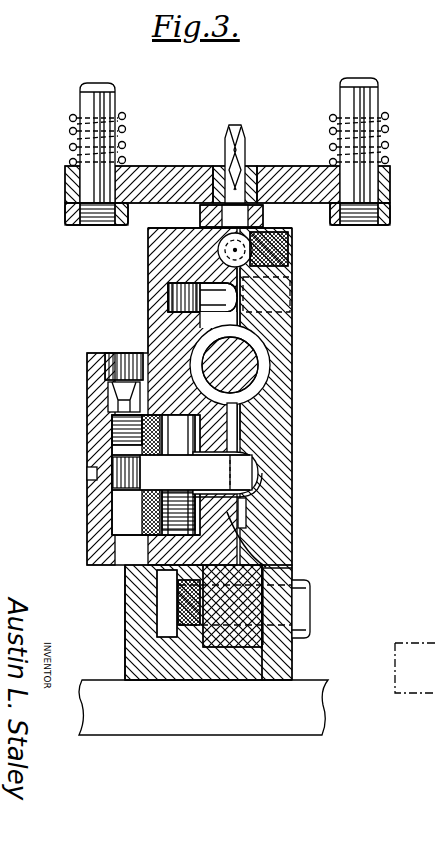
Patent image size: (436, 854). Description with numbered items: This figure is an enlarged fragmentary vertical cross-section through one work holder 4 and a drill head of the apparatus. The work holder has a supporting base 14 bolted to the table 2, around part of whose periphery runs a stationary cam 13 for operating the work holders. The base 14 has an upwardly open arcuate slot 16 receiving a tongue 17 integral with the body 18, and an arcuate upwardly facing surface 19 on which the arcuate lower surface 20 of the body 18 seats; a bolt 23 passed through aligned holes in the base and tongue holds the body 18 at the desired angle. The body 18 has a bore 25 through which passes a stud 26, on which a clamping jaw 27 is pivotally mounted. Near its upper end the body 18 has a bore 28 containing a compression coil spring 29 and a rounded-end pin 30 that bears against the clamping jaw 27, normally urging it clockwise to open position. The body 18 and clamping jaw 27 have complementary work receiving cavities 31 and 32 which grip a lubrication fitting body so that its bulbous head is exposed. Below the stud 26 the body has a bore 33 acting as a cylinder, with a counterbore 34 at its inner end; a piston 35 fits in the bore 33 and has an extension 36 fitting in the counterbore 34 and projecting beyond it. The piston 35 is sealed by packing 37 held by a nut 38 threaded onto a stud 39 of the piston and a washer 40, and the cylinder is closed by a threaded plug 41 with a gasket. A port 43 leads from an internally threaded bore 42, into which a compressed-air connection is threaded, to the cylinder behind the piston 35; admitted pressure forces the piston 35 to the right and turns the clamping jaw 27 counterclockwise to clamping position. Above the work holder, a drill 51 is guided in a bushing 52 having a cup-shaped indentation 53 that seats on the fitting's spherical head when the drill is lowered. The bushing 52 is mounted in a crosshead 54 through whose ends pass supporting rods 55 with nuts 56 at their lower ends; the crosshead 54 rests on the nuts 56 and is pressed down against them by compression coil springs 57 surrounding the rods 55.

The table 2 is at (177, 726).
The work holder 4 is at (278, 570).
The stationary cam 13 is at (401, 694).
The supporting base 14 is at (430, 382).
The arcuate slot 16 is at (262, 552).
The tongue 17 is at (213, 680).
The body 18 is at (157, 318).
The arcuate upwardly facing surface 19 is at (132, 563).
The arcuate lower surface 20 is at (157, 574).
The bolt 23 is at (300, 607).
The bore 25 is at (283, 349).
The stud 26 is at (287, 384).
The clamping jaw 27 is at (277, 295).
The bore 28 is at (165, 266).
The compression coil spring 29 is at (168, 293).
The pin 30 is at (215, 287).
The work receiving cavity 31 is at (225, 292).
The work receiving cavity 32 is at (290, 253).
The bore 33 is at (120, 432).
The counterbore 34 is at (231, 432).
The piston 35 is at (222, 515).
The extension 36 is at (262, 473).
The packing 37 is at (150, 440).
The nut 38 is at (140, 512).
The stud 39 is at (130, 463).
The washer 40 is at (125, 522).
The threaded plug 41 is at (118, 503).
The internally threaded bore 42 is at (125, 362).
The port 43 is at (110, 398).
The drill 51 is at (243, 136).
The bushing 52 is at (224, 168).
The cup-shaped indentation 53 is at (263, 219).
The crosshead 54 is at (300, 180).
The supporting rod 55 is at (92, 95).
The nut 56 is at (68, 213).
The compression coil spring 57 is at (72, 132).